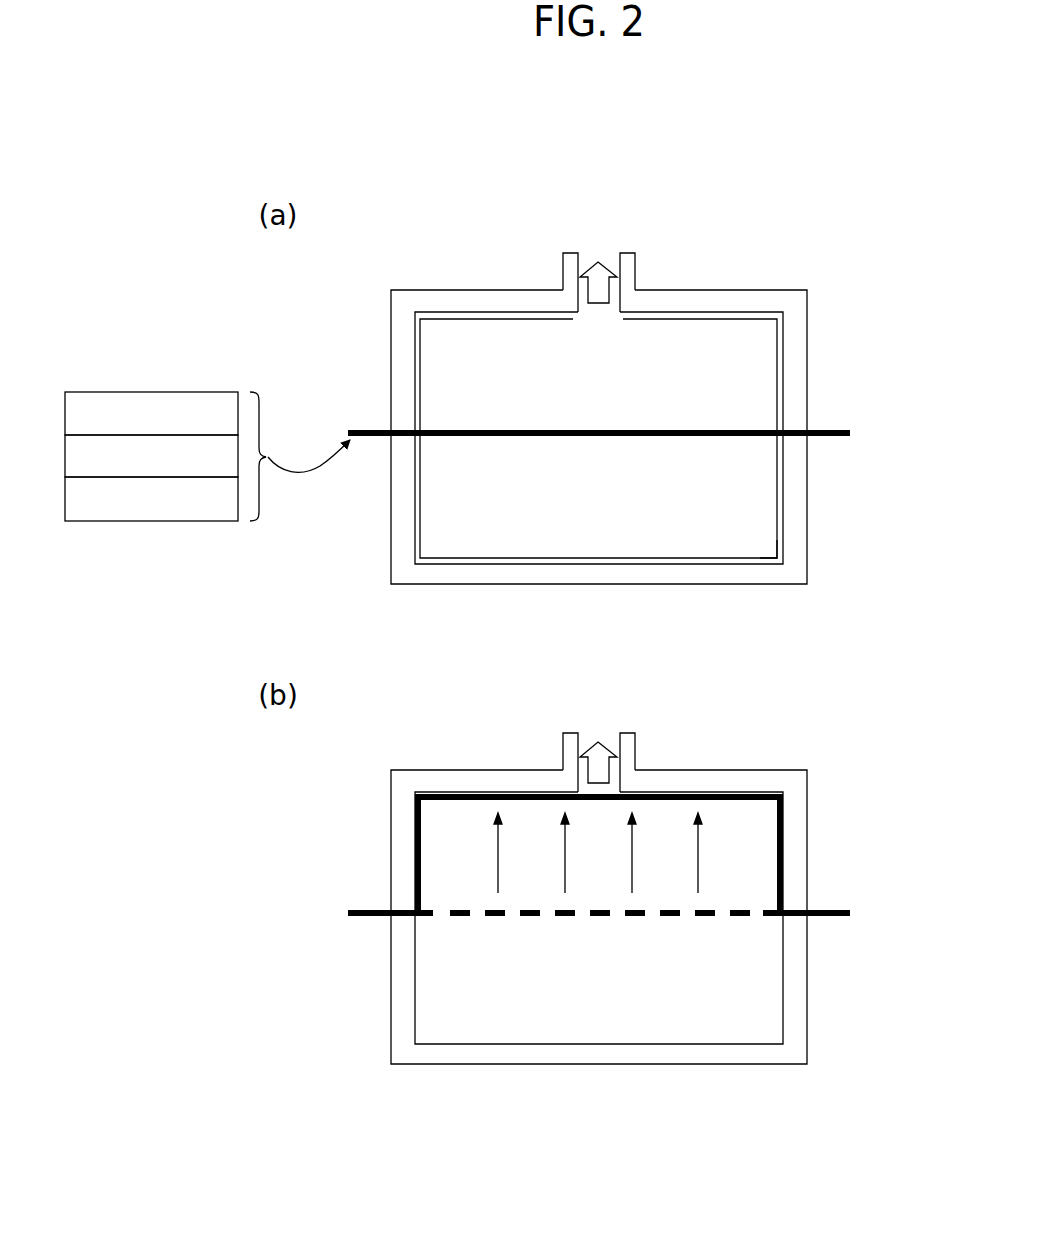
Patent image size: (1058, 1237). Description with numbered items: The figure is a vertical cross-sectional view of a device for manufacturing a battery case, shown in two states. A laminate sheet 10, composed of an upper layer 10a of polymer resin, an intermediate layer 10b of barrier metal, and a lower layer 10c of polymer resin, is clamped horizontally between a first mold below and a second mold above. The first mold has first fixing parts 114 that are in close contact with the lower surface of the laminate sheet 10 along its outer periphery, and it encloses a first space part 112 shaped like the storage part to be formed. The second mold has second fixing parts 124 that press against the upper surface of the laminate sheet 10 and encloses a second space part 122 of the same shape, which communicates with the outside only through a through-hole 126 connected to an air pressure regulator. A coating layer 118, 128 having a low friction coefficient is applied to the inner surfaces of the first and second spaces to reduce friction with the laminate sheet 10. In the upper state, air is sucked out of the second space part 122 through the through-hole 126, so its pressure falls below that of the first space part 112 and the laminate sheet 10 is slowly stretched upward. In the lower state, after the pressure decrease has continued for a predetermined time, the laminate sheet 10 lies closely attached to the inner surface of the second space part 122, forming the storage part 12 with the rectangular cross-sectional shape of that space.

The laminate sheet 10 is at (833, 428).
The upper layer 10a is at (151, 413).
The intermediate layer 10b is at (151, 456).
The lower layer 10c is at (151, 499).
The storage part 12 is at (736, 806).
The first space part 112 is at (740, 500).
The first fixing parts 114 is at (404, 508).
The coating layer 118 is at (777, 540).
The second space part 122 is at (740, 358).
The second fixing parts 124 is at (404, 355).
The through-hole 126 is at (636, 269).
The coating layer 128 is at (467, 318).